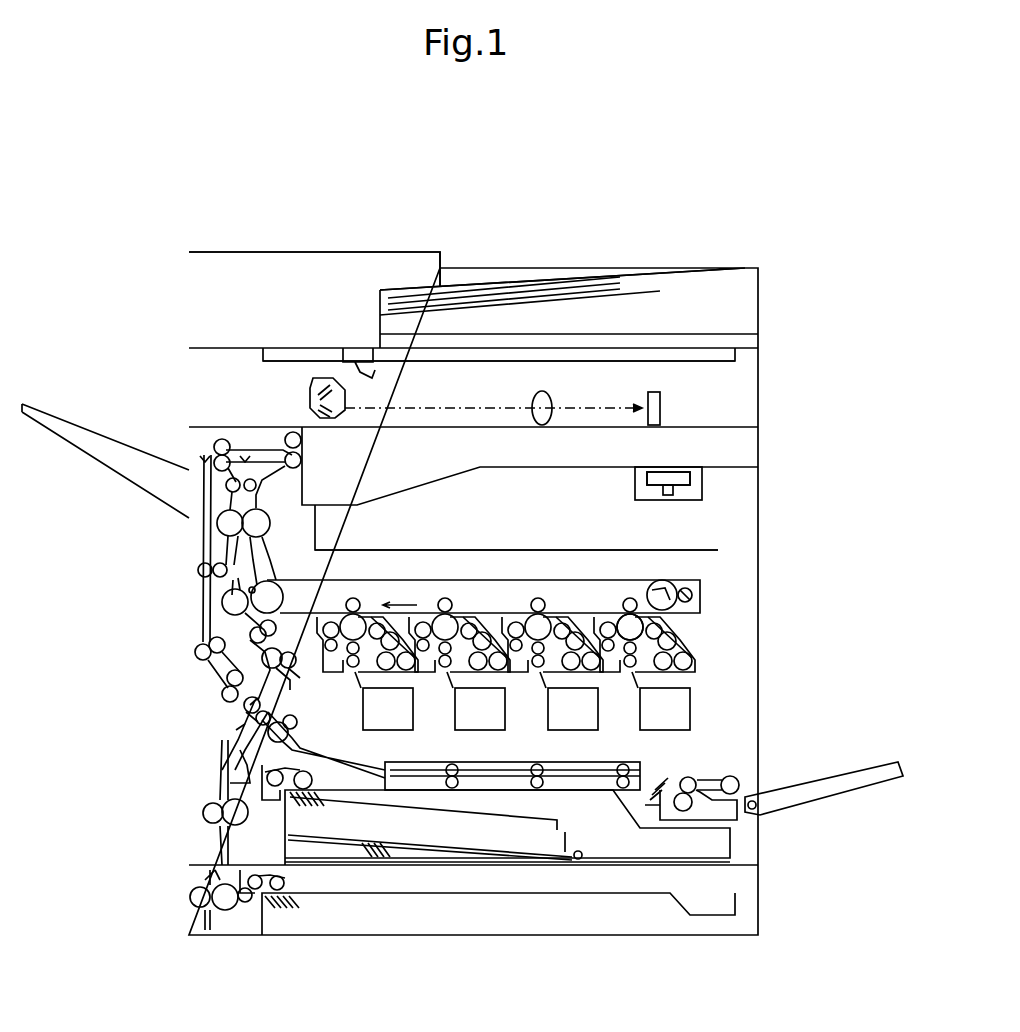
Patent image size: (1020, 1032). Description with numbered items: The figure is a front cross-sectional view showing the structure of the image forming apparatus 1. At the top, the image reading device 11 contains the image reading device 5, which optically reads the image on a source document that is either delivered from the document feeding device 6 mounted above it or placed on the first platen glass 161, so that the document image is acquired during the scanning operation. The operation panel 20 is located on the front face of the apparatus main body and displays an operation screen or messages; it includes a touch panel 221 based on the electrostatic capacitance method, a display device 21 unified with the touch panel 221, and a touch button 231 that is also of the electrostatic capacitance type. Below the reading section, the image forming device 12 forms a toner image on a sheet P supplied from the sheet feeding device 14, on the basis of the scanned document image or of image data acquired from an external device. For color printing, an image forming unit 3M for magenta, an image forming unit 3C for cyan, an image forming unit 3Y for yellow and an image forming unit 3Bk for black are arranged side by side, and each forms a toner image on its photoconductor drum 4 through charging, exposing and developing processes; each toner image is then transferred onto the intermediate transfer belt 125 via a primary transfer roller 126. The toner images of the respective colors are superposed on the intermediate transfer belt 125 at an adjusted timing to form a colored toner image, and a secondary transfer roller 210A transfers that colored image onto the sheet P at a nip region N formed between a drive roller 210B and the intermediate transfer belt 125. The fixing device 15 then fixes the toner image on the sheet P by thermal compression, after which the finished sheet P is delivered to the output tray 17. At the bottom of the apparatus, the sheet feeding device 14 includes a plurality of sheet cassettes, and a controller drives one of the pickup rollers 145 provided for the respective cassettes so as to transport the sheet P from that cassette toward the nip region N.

The image forming apparatus 1 is at (740, 222).
The document feeding device 6 is at (210, 277).
The image reading device 11 is at (762, 333).
The first platen glass 161 is at (620, 352).
The image reading device 5 is at (303, 388).
The output tray 17 is at (340, 505).
The operation panel 20 is at (715, 481).
The display device 21 is at (650, 475).
The touch panel 221 is at (668, 478).
The touch button 231 is at (675, 490).
The fixing device 15 is at (212, 522).
The image forming device 12 is at (740, 593).
The drive roller 210B is at (262, 590).
The nip region N is at (252, 590).
The secondary transfer roller 210A is at (222, 602).
The primary transfer roller 126 is at (634, 580).
The intermediate transfer belt 125 is at (490, 580).
The image forming unit for black 3Bk is at (356, 600).
The image forming unit for yellow 3Y is at (447, 600).
The image forming unit for cyan 3C is at (540, 600).
The image forming unit for magenta 3M is at (632, 598).
The photoconductor drum 4 is at (632, 642).
The sheet P is at (557, 818).
The pickup roller 145 is at (305, 781).
The sheet feeding device 14 is at (738, 886).